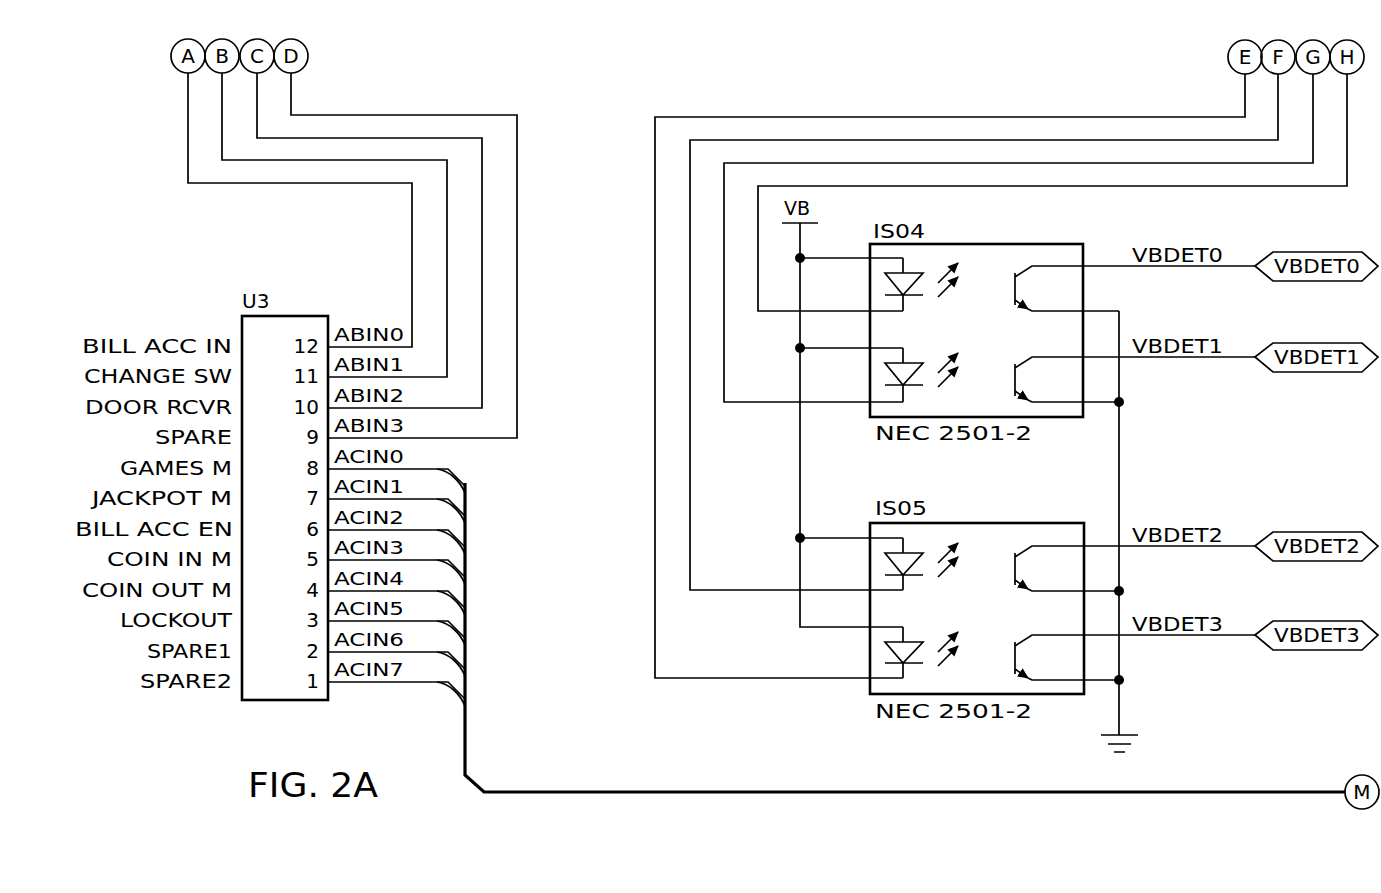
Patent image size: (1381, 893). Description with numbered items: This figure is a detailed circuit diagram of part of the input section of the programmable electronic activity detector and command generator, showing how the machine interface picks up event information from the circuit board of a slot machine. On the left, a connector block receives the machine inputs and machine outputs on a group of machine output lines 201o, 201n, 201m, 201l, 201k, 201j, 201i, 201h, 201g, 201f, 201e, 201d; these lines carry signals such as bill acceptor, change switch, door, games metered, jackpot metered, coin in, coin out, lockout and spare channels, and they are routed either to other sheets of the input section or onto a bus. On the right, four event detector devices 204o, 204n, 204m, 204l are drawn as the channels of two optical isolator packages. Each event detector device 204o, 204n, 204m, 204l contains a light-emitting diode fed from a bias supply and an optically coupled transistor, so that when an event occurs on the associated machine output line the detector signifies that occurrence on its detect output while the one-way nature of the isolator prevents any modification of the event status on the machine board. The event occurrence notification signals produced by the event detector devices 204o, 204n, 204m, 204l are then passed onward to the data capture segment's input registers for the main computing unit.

The machine output line 201o is at (405, 349).
The machine output line 201n is at (433, 378).
The machine output line 201m is at (457, 408).
The machine output line 201l is at (508, 440).
The machine output line 201k is at (468, 499).
The machine output line 201j is at (468, 529).
The machine output line 201i is at (468, 559).
The machine output line 201h is at (468, 589).
The machine output line 201g is at (468, 619).
The machine output line 201f is at (468, 649).
The machine output line 201e is at (468, 679).
The machine output line 201d is at (468, 709).
The event detector device 204o is at (985, 262).
The event detector device 204n is at (980, 403).
The event detector device 204m is at (990, 540).
The event detector device 204l is at (982, 680).